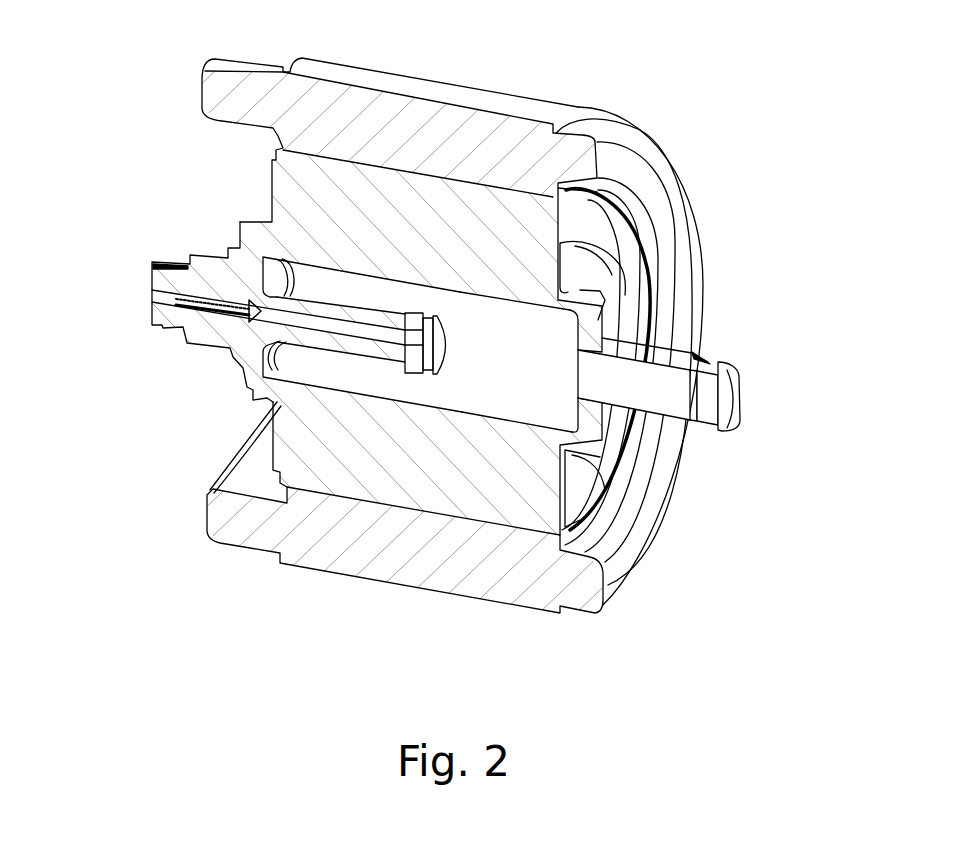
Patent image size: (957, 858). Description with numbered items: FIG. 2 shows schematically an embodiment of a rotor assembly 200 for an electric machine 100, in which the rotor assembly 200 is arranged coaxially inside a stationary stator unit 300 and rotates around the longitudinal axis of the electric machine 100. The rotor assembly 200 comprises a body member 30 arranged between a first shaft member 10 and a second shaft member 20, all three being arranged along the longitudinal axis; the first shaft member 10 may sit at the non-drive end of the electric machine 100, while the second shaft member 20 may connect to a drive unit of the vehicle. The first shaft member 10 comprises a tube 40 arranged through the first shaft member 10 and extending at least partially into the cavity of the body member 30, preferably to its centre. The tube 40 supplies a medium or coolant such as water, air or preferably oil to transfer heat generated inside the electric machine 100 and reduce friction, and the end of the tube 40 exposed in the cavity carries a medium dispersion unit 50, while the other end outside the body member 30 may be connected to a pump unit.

The electric machine 100 is at (773, 97).
The rotor assembly 200 is at (191, 189).
The stator unit 300 is at (640, 502).
The first shaft member 10 is at (153, 329).
The second shaft member 20 is at (712, 363).
The body member 30 is at (508, 380).
The tube 40 is at (308, 345).
The medium dispersion unit 50 is at (423, 382).